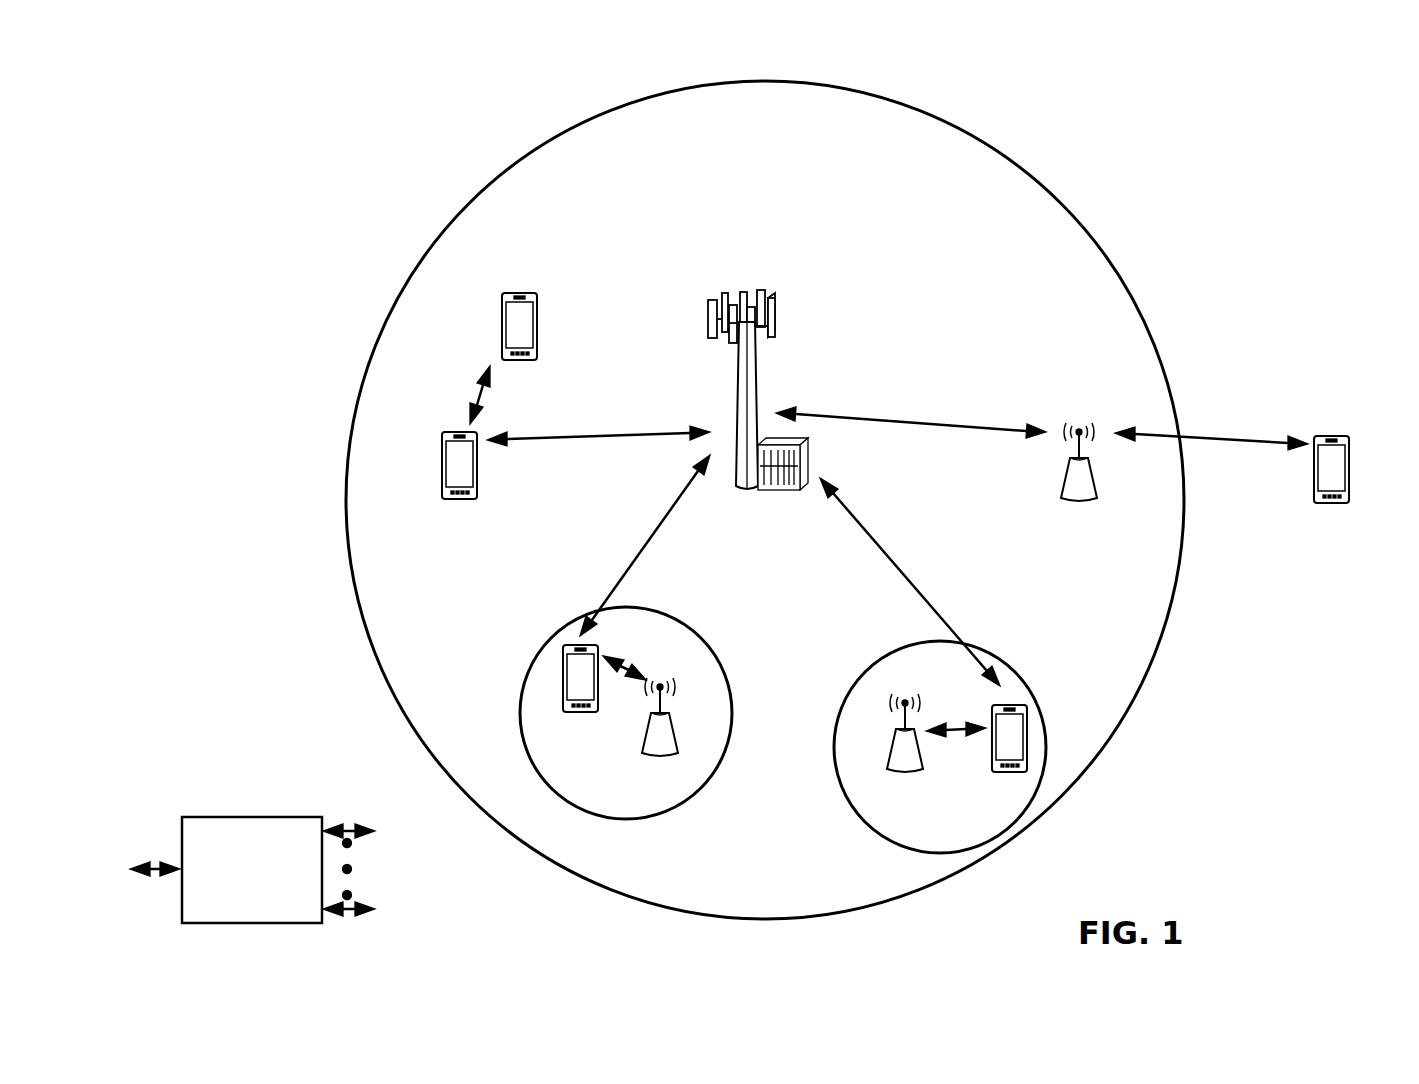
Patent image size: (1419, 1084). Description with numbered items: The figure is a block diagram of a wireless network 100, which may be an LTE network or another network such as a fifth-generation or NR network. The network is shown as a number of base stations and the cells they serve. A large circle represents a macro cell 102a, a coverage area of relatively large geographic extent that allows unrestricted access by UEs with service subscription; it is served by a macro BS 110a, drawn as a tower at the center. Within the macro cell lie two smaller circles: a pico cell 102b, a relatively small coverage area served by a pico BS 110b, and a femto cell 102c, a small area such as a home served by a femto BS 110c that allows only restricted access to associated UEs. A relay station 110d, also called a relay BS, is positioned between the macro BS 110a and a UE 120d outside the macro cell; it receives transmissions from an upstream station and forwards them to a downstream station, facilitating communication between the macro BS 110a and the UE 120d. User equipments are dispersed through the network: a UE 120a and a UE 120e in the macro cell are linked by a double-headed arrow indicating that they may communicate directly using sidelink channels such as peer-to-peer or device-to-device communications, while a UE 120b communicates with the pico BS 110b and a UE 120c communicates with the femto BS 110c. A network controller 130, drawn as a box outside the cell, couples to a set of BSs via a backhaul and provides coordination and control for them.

The wireless network 100 is at (228, 76).
The macro cell 102a is at (1043, 187).
The pico cell 102b is at (714, 652).
The femto cell 102c is at (879, 660).
The macro BS 110a is at (750, 282).
The pico BS 110b is at (680, 748).
The femto BS 110c is at (885, 757).
The relay station 110d is at (1080, 421).
The UE 120a is at (441, 463).
The UE 120b is at (568, 713).
The UE 120c is at (1000, 774).
The UE 120d is at (1341, 437).
The UE 120e is at (501, 316).
The network controller 130 is at (250, 816).